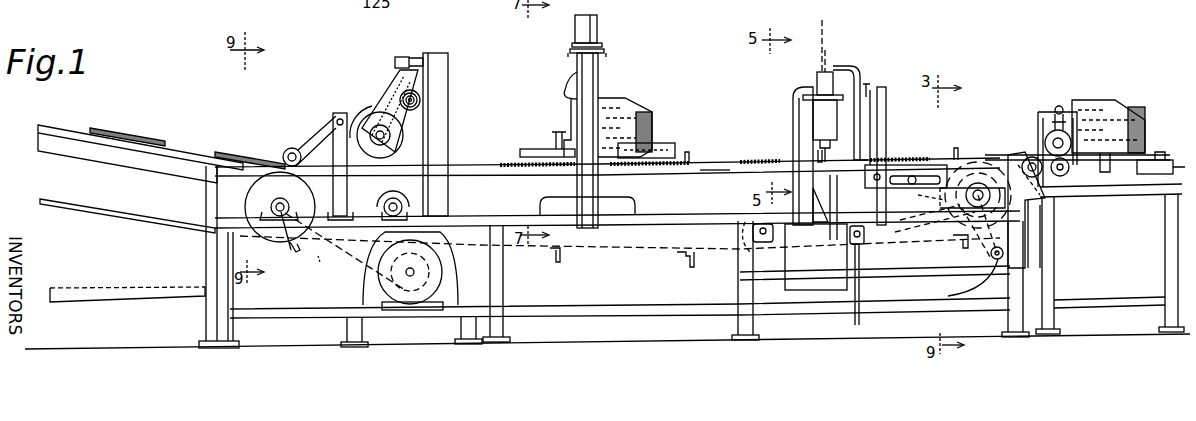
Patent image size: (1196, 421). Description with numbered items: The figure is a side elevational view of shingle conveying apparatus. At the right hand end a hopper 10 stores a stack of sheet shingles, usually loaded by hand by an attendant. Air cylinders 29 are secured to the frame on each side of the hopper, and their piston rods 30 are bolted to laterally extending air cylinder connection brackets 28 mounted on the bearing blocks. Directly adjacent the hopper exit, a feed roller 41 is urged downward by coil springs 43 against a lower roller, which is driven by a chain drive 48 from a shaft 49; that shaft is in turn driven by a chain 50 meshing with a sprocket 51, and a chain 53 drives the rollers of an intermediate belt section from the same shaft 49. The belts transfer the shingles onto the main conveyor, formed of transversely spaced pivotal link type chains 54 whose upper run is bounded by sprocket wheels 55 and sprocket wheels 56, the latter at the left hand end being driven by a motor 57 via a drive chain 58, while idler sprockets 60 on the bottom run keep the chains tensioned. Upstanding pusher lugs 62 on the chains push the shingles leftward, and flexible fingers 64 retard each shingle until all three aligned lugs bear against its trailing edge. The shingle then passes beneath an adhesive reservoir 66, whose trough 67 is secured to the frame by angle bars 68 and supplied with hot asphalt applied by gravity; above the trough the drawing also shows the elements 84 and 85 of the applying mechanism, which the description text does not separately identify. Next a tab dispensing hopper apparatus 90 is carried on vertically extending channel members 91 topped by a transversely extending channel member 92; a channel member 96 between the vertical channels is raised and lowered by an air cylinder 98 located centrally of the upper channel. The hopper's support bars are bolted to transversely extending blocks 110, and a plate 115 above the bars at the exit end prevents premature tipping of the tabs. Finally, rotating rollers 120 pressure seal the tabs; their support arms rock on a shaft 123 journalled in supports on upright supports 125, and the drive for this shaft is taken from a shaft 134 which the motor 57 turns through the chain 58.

The hopper 10 is at (1138, 109).
The air cylinder connection bracket 28 is at (1165, 178).
The air cylinders 29 is at (1108, 153).
The piston rods 30 is at (1155, 160).
The feed roller 41 is at (1050, 130).
The coil springs 43 is at (1054, 128).
The chain drive 48 is at (1044, 192).
The shaft 49 is at (968, 280).
The chain 50 is at (958, 244).
The sprocket 51 is at (925, 205).
The chain 53 is at (1036, 200).
The pivotal link type chains 54 is at (722, 172).
The sprocket wheels 55 is at (975, 160).
The sprocket wheels 56 is at (258, 194).
The motor 57 is at (446, 270).
The drive chain 58 is at (318, 256).
The idler sprockets 60 is at (760, 246).
The pusher lugs 62 is at (562, 250).
The flexible fingers 64 is at (868, 160).
The adhesive reservoir 66 is at (870, 66).
The trough 67 is at (812, 130).
The angle bars 68 is at (801, 108).
The rod 84 is at (824, 50).
The cylinder 85 is at (821, 82).
The tab dispensing hopper apparatus 90 is at (653, 99).
The vertically extending channel members 91 is at (586, 68).
The transversely extending channel member 92 is at (606, 51).
The channel member 96 is at (571, 112).
The air cylinder 98 is at (597, 28).
The blocks 110 is at (660, 143).
The plate 115 is at (536, 149).
The rollers 120 is at (376, 110).
The shaft 123 is at (422, 100).
The upright supports 125 is at (446, 140).
The shaft 134 is at (290, 246).